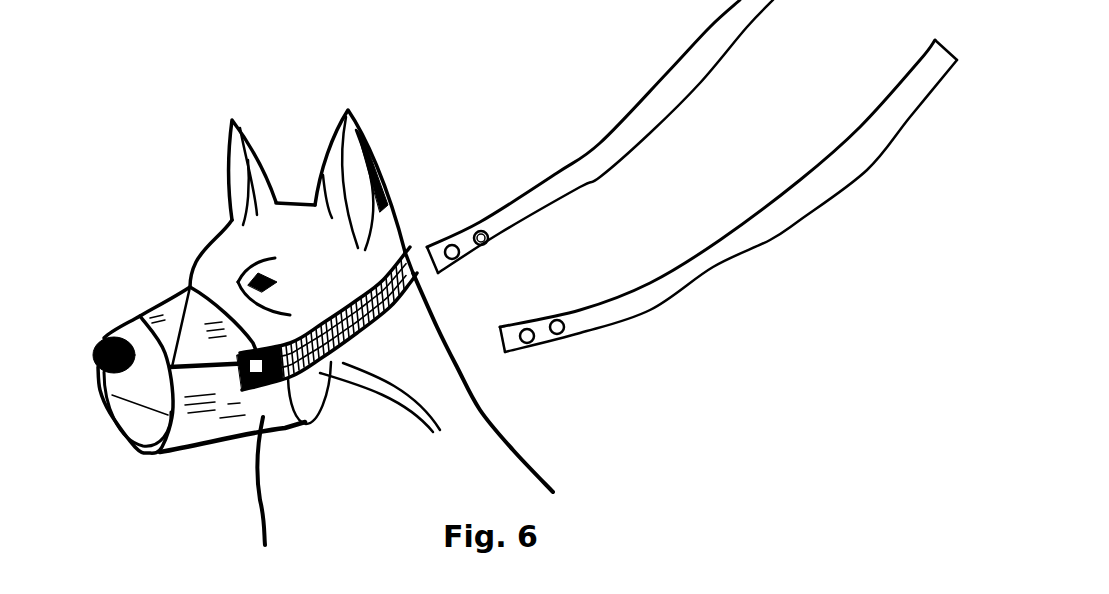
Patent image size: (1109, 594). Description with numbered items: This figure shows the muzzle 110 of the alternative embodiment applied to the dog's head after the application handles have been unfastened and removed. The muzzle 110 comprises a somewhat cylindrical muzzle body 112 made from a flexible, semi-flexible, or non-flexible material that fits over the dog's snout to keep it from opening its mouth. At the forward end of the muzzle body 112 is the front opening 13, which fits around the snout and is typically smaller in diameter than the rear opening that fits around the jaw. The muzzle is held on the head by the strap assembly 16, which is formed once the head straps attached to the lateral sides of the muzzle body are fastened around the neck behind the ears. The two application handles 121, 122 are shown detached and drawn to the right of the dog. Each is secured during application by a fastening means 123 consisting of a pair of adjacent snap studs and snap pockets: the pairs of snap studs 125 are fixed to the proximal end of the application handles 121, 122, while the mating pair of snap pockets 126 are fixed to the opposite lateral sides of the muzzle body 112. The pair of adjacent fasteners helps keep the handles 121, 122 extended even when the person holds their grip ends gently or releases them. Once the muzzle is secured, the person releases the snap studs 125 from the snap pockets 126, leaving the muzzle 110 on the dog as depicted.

The muzzle 110 is at (215, 391).
The front opening 13 is at (99, 425).
The muzzle body 112 is at (258, 458).
The snap pockets 126 is at (303, 377).
The fastening means 123 is at (401, 415).
The strap assembly 16 is at (400, 297).
The snap studs 125 is at (493, 240).
The application handle 122 is at (600, 136).
The application handle 121 is at (717, 255).